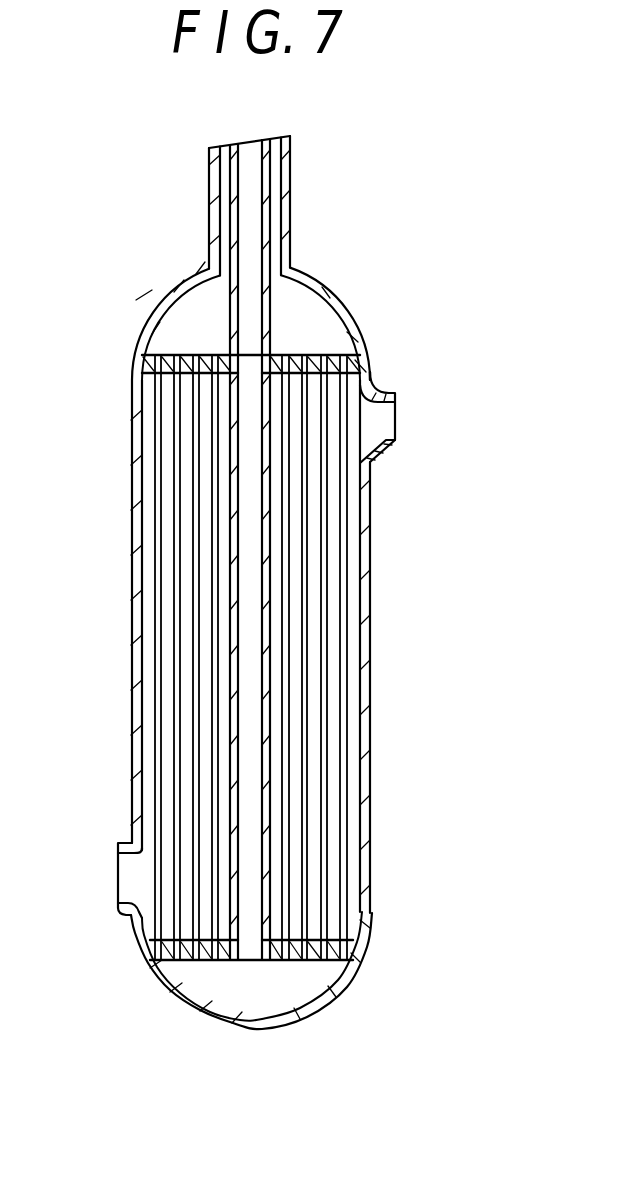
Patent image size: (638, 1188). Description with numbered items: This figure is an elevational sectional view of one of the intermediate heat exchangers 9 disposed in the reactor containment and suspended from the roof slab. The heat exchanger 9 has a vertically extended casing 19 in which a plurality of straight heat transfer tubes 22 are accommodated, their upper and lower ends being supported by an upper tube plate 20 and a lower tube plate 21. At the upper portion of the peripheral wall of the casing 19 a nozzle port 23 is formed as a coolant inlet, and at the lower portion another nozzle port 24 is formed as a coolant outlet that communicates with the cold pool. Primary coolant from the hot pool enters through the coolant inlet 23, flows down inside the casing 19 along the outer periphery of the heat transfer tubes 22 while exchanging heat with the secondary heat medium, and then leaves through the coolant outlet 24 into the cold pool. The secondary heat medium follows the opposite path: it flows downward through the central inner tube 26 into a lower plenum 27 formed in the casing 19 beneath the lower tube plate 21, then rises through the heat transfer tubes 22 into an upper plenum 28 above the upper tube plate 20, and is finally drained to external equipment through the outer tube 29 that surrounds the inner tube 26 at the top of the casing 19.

The intermediate heat exchanger 9 is at (336, 278).
The casing 19 is at (372, 575).
The upper tube plate 20 is at (333, 355).
The lower tube plate 21 is at (313, 963).
The heat transfer tubes 22 is at (178, 640).
The nozzle port (coolant inlet) 23 is at (383, 457).
The nozzle port (coolant outlet) 24 is at (123, 843).
The inner tube 26 is at (270, 203).
The lower plenum 27 is at (215, 982).
The upper plenum 28 is at (192, 317).
The outer tube 29 is at (292, 160).